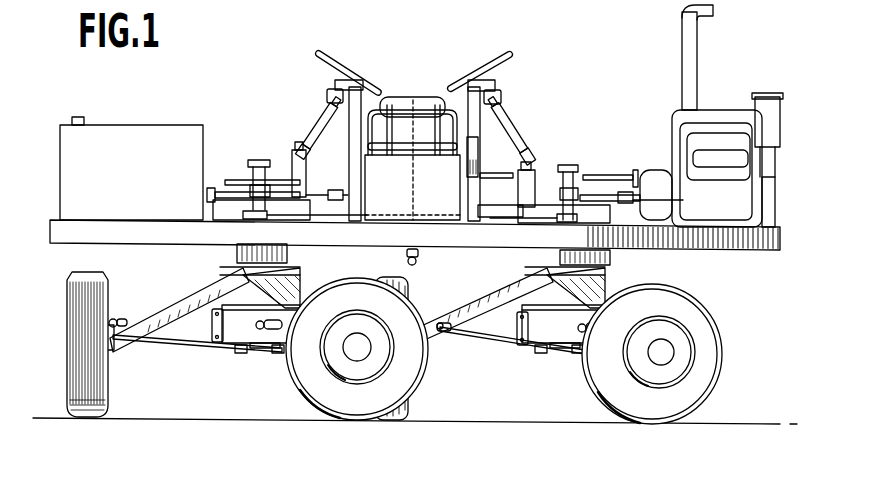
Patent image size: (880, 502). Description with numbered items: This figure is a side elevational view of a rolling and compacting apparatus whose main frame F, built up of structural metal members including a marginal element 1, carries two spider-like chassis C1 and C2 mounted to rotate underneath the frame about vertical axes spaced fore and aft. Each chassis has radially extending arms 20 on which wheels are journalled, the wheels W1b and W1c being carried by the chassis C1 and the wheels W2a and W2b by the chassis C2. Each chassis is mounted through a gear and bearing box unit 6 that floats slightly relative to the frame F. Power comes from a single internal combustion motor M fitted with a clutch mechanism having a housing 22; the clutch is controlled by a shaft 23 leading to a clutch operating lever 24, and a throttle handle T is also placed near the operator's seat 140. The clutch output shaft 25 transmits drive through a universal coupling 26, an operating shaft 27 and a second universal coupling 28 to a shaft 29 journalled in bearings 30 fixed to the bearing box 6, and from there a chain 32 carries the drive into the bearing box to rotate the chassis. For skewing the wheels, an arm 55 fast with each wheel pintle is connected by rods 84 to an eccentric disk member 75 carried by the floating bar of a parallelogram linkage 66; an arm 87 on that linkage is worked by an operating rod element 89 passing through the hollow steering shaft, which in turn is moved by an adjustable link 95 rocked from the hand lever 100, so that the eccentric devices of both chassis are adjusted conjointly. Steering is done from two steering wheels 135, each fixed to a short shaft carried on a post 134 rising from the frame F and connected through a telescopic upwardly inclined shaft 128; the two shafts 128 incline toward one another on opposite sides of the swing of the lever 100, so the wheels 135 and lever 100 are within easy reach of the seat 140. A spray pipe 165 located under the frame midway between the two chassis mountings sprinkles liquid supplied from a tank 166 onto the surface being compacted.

The marginal element 1 is at (50, 229).
The tank 166 is at (166, 140).
The bearings 30 is at (212, 186).
The chain 32 is at (314, 226).
The adjustable link 95 is at (250, 168).
The shaft 29 is at (308, 192).
The universal coupling 28 is at (334, 189).
The post 134 is at (350, 134).
The steering wheel 135 is at (324, 45).
The upwardly inclined shaft 128 is at (318, 110).
The operator's seat 140 is at (432, 108).
The lever 100 is at (408, 130).
The clutch operating lever 24 is at (480, 176).
The throttle handle T is at (479, 160).
The operating shaft 27 is at (507, 218).
The universal coupling 26 is at (631, 207).
The shaft 23 is at (621, 175).
The clutch housing 22 is at (664, 172).
The clutch output shaft 25 is at (667, 201).
The internal combustion motor M is at (730, 110).
The gear and bearing box unit 6 is at (212, 256).
The spray pipe 165 is at (405, 265).
The main frame F is at (758, 255).
The chassis C1 is at (171, 302).
The chassis C2 is at (493, 301).
The arms 20 is at (172, 332).
The operating rod element 89 is at (258, 318).
The arm 87 is at (282, 326).
The parallelogram linkage 66 is at (206, 348).
The rods 84 is at (230, 355).
The disk member 75 is at (260, 355).
The arm 55 is at (116, 319).
The wheel W1b is at (70, 334).
The wheel W2a is at (408, 396).
The wheel W1c is at (332, 400).
The wheel W2b is at (700, 395).